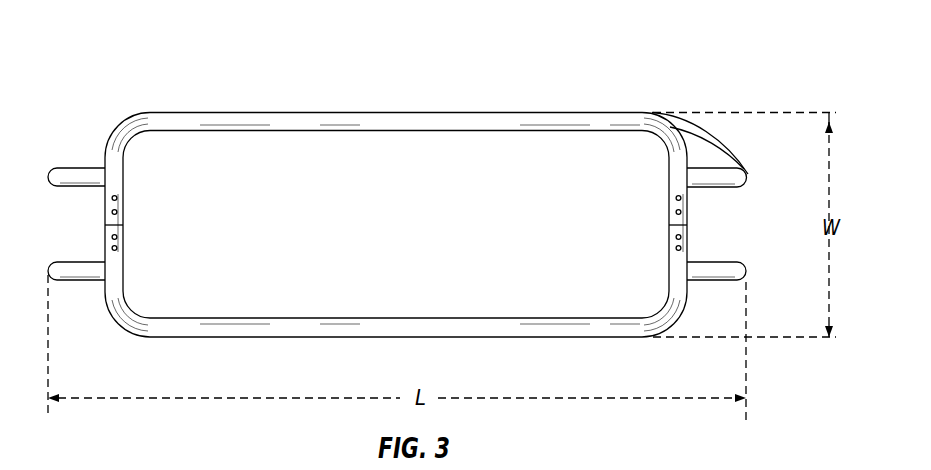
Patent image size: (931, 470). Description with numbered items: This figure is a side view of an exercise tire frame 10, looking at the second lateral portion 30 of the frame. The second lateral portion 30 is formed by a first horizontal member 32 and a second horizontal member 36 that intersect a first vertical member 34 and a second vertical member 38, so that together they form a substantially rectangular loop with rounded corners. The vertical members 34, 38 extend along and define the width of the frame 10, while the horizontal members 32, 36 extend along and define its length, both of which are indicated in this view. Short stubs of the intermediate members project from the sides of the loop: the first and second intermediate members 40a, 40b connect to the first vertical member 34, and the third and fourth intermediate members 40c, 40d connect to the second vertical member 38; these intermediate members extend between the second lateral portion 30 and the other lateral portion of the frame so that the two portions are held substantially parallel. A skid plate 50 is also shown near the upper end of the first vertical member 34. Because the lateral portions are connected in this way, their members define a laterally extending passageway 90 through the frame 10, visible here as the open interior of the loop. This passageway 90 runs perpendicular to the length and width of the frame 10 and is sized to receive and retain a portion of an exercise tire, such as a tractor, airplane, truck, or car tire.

The exercise tire frame 10 is at (148, 45).
The second lateral portion 30 is at (555, 108).
The first horizontal member 32 is at (443, 111).
The first vertical member 34 is at (686, 215).
The second horizontal member 36 is at (532, 329).
The second vertical member 38 is at (105, 232).
The first intermediate member 40a is at (703, 271).
The second intermediate member 40b is at (741, 175).
The third intermediate member 40c is at (67, 281).
The fourth intermediate member 40d is at (68, 167).
The skid plate 50 is at (713, 138).
The laterally extending passageway 90 is at (410, 241).